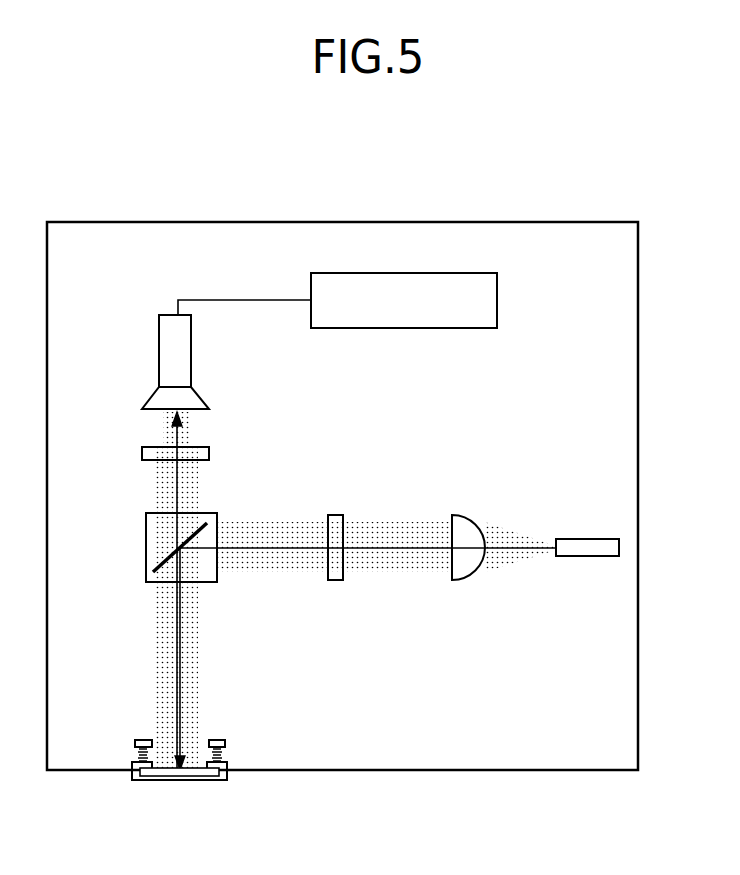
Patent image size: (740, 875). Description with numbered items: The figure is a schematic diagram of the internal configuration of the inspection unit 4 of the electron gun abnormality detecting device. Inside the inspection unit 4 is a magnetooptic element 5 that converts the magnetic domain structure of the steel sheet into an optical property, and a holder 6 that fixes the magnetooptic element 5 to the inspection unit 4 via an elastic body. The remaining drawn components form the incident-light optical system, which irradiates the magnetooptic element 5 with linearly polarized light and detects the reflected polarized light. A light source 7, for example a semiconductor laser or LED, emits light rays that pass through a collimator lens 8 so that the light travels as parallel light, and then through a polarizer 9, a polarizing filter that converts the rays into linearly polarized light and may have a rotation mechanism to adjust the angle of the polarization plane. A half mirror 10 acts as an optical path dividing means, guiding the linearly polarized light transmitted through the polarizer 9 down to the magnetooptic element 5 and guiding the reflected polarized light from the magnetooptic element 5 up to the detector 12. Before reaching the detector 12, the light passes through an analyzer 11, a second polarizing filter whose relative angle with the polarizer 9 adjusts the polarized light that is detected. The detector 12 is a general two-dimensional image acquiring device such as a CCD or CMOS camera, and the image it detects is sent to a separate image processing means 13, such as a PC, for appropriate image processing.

The inspection unit 4 is at (598, 222).
The magnetooptic element 5 is at (178, 780).
The holder 6 is at (132, 762).
The light source 7 is at (591, 556).
The collimator lens 8 is at (462, 580).
The polarizer 9 is at (338, 580).
The half mirror 10 is at (216, 582).
The analyzer 11 is at (209, 453).
The detector 12 is at (192, 352).
The image processing means 13 is at (445, 328).